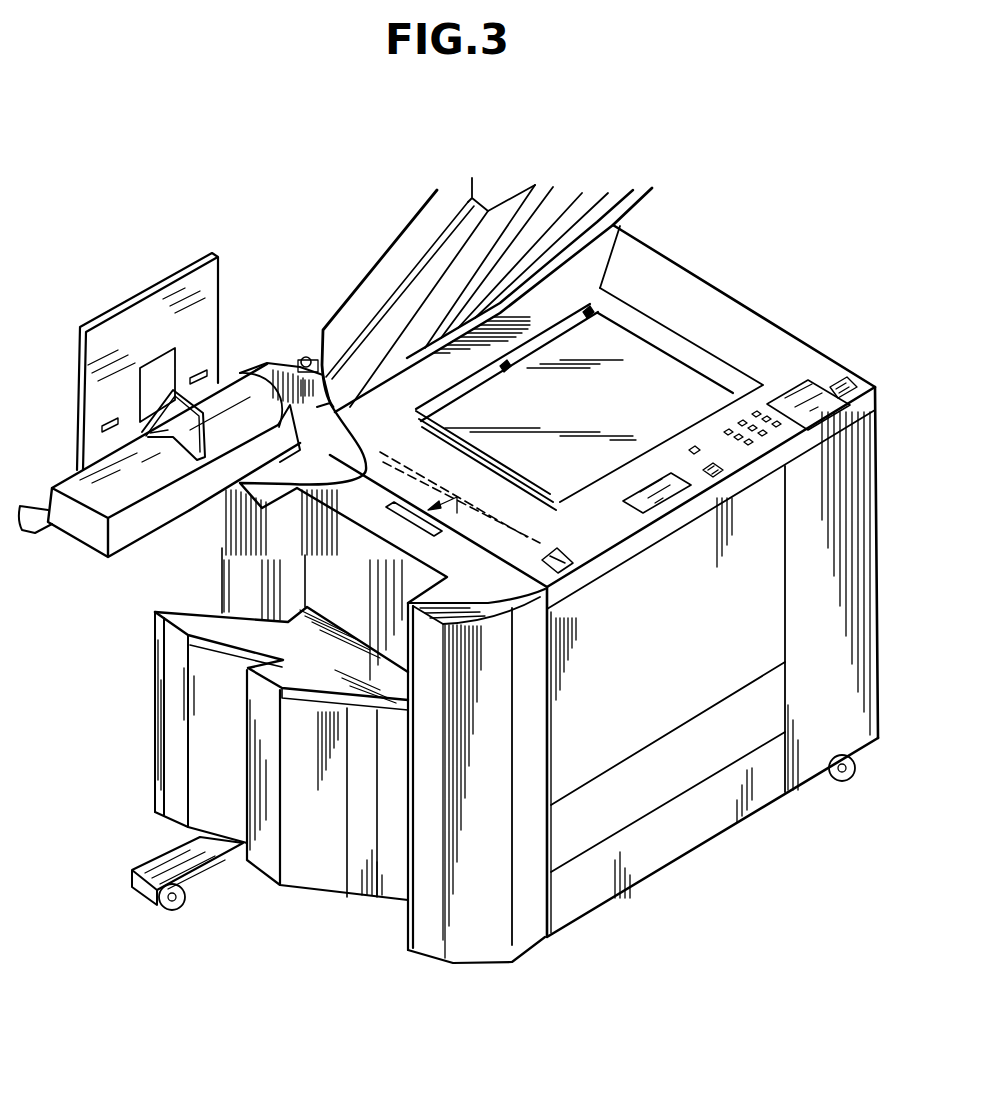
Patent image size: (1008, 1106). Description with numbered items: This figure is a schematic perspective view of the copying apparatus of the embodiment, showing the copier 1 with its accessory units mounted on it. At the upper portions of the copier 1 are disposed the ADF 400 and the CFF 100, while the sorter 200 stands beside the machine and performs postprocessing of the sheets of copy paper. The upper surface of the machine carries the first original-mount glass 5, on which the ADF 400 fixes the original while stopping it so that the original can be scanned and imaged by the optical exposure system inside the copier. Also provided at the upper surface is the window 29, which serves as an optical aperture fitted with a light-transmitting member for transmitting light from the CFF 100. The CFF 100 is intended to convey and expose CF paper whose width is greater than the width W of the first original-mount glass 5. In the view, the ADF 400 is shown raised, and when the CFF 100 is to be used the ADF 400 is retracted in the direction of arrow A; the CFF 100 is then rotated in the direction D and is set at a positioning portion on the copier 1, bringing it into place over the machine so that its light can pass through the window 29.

The copier 1 is at (878, 433).
The first original-mount glass 5 is at (583, 475).
The window 29 is at (578, 565).
The CFF 100 is at (68, 550).
The sorter 200 is at (155, 752).
The ADF 400 is at (413, 214).
The width of the first original-mount glass W is at (733, 393).
The direction of arrow A is at (380, 237).
The direction D is at (73, 576).